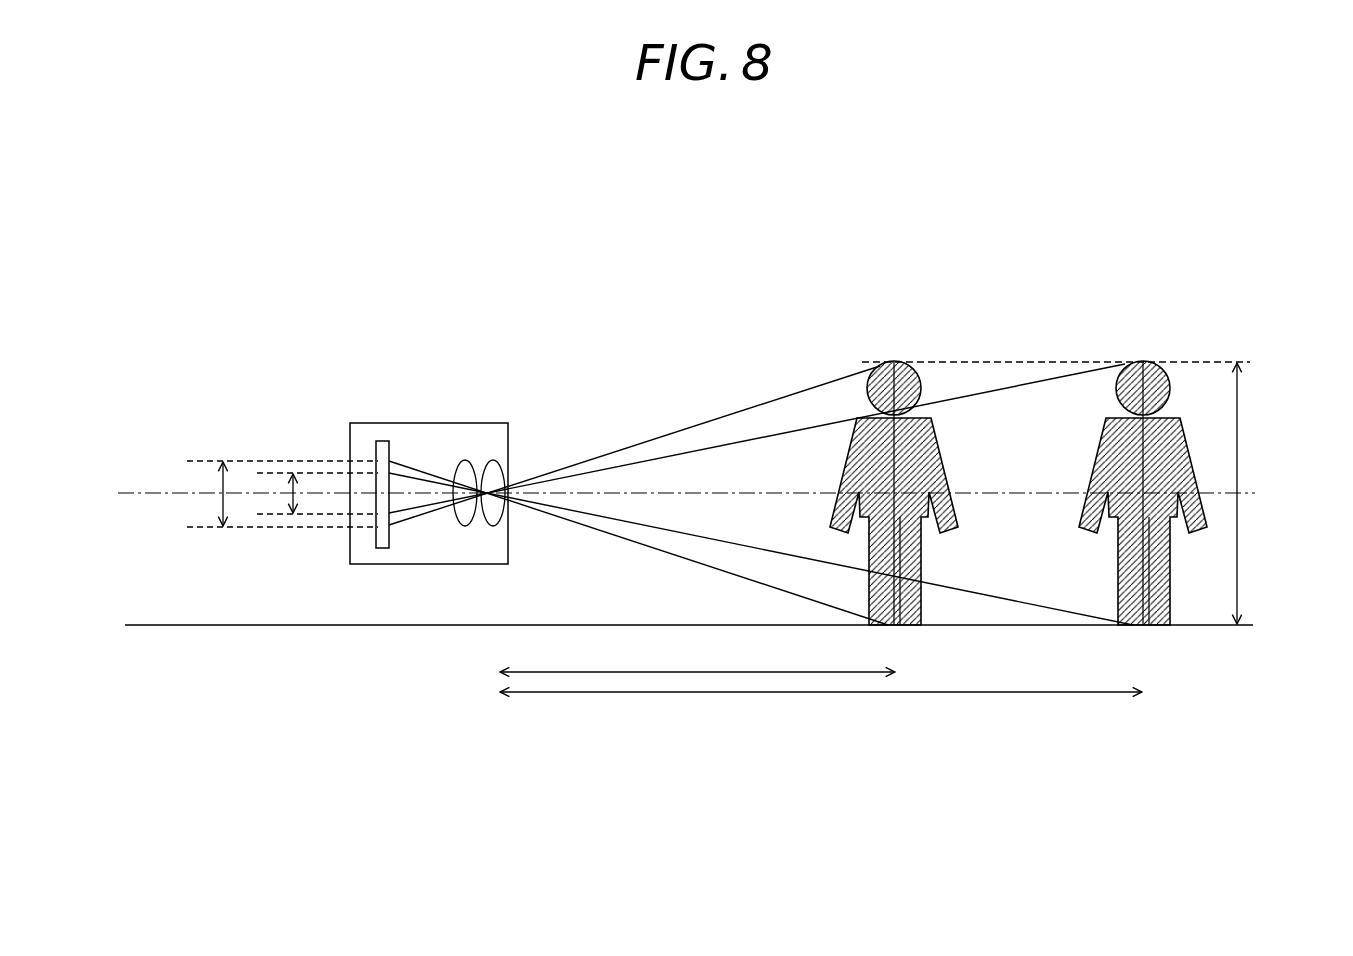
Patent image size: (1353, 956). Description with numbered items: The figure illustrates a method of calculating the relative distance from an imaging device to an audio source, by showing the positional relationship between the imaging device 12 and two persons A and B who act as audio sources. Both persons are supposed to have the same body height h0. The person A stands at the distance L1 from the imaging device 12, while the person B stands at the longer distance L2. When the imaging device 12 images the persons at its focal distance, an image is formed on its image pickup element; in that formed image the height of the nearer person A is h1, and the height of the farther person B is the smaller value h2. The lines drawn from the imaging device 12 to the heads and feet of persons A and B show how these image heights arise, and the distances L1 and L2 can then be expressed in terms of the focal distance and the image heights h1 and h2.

The imaging device 12 is at (431, 423).
The person A is at (894, 475).
The person B is at (1143, 475).
The body height h0 is at (1256, 493).
The height of person A in the formed image h1 is at (282, 479).
The height of person B in the formed image h2 is at (317, 472).
The distance from the imaging device to person A L1 is at (697, 656).
The distance from the imaging device to person B L2 is at (821, 677).